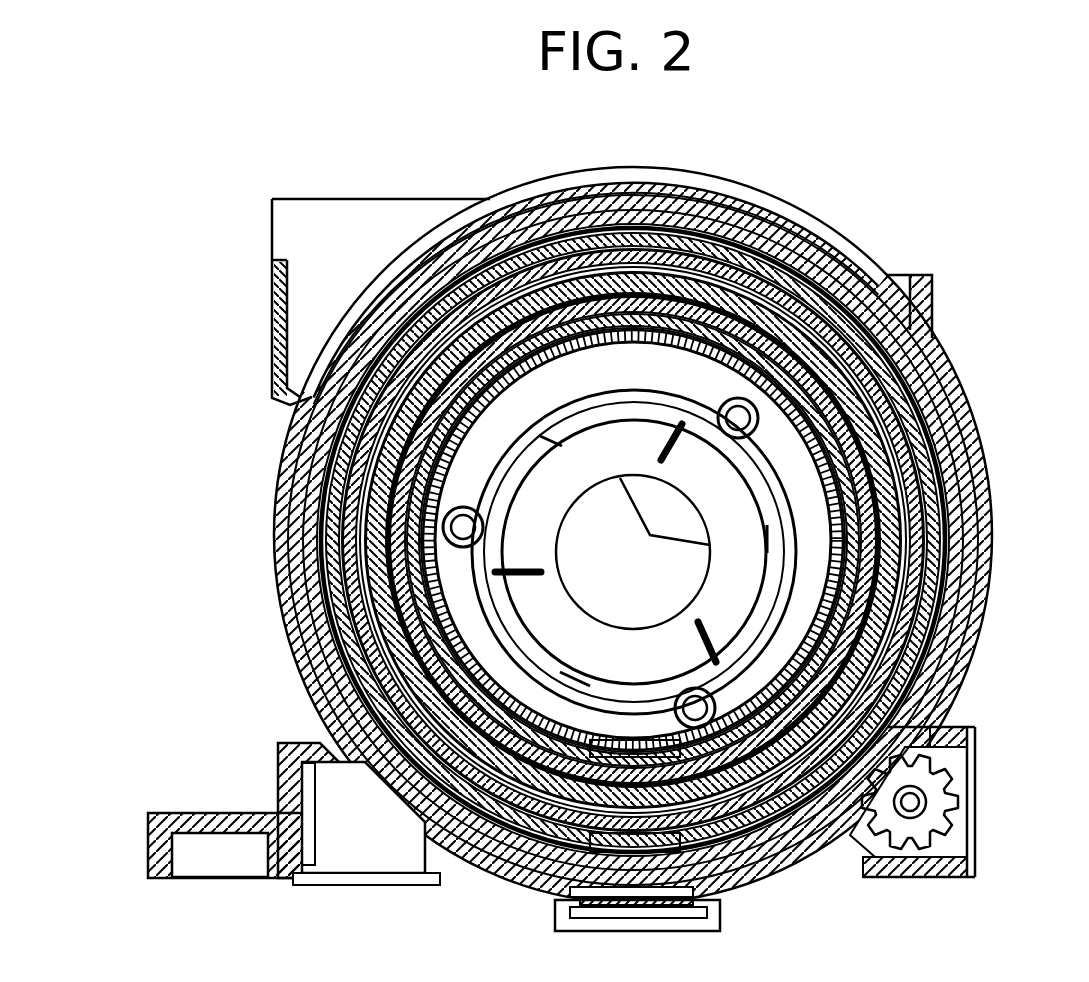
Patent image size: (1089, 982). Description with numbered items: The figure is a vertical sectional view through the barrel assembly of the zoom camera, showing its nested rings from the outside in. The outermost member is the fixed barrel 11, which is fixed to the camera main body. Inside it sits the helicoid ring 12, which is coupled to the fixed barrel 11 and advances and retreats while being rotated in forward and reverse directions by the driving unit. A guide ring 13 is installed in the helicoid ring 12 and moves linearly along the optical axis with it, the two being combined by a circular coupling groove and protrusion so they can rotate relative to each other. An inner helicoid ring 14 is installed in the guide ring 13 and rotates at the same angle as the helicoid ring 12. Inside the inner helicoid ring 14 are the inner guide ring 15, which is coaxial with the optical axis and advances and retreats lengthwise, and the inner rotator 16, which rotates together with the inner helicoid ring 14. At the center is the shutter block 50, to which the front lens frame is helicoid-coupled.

The fixed barrel 11 is at (975, 455).
The helicoid ring 12 is at (945, 395).
The guide ring 13 is at (917, 342).
The inner helicoid ring 14 is at (740, 300).
The inner guide ring 15 is at (703, 312).
The inner rotator 16 is at (790, 388).
The shutter block 50 is at (765, 572).